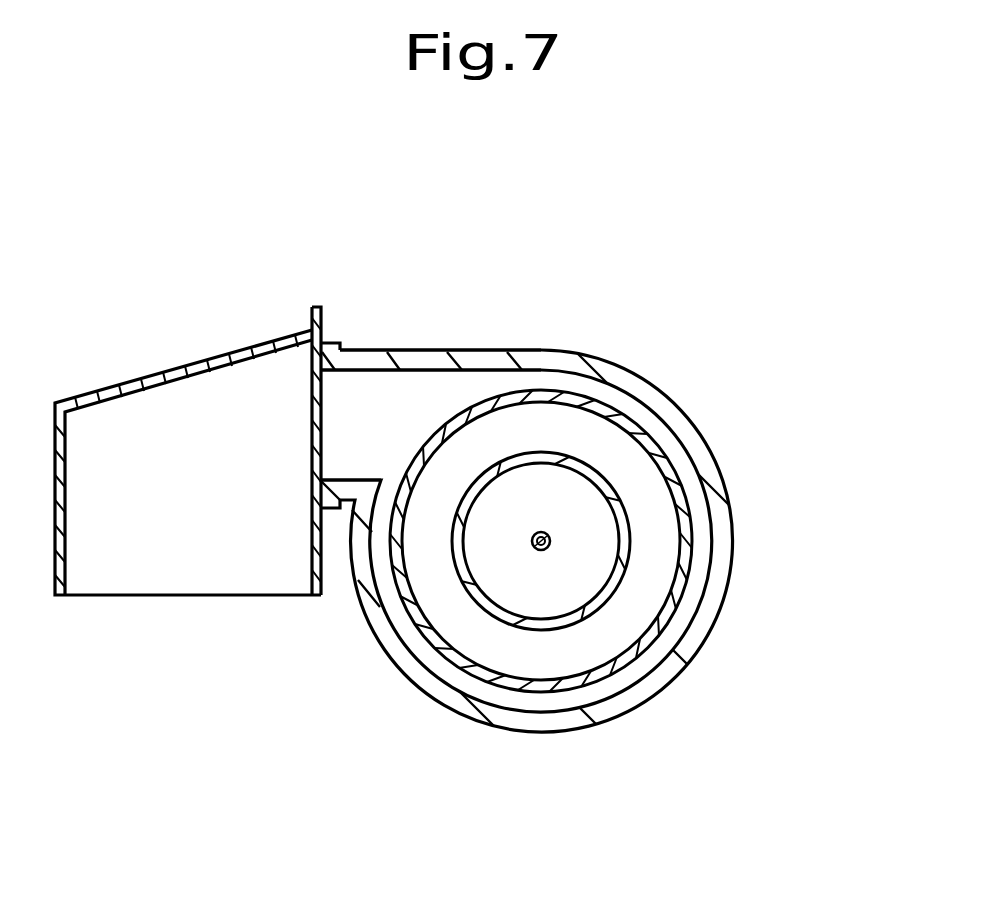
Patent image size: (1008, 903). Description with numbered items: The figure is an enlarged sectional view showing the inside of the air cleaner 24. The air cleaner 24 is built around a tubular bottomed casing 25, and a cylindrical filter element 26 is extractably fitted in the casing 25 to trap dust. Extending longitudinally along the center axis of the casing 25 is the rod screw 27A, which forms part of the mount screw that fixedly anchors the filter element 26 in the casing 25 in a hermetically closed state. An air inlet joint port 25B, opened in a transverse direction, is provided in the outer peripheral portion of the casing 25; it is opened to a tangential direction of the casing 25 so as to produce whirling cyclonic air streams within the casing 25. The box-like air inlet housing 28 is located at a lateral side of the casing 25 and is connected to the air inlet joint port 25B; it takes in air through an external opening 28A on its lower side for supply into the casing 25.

The air cleaner 24 is at (597, 473).
The casing 25 is at (682, 423).
The air inlet joint port 25B is at (387, 402).
The filter element 26 is at (650, 648).
The rod screw 27A is at (550, 541).
The air inlet housing 28 is at (188, 485).
The external opening 28A is at (175, 582).